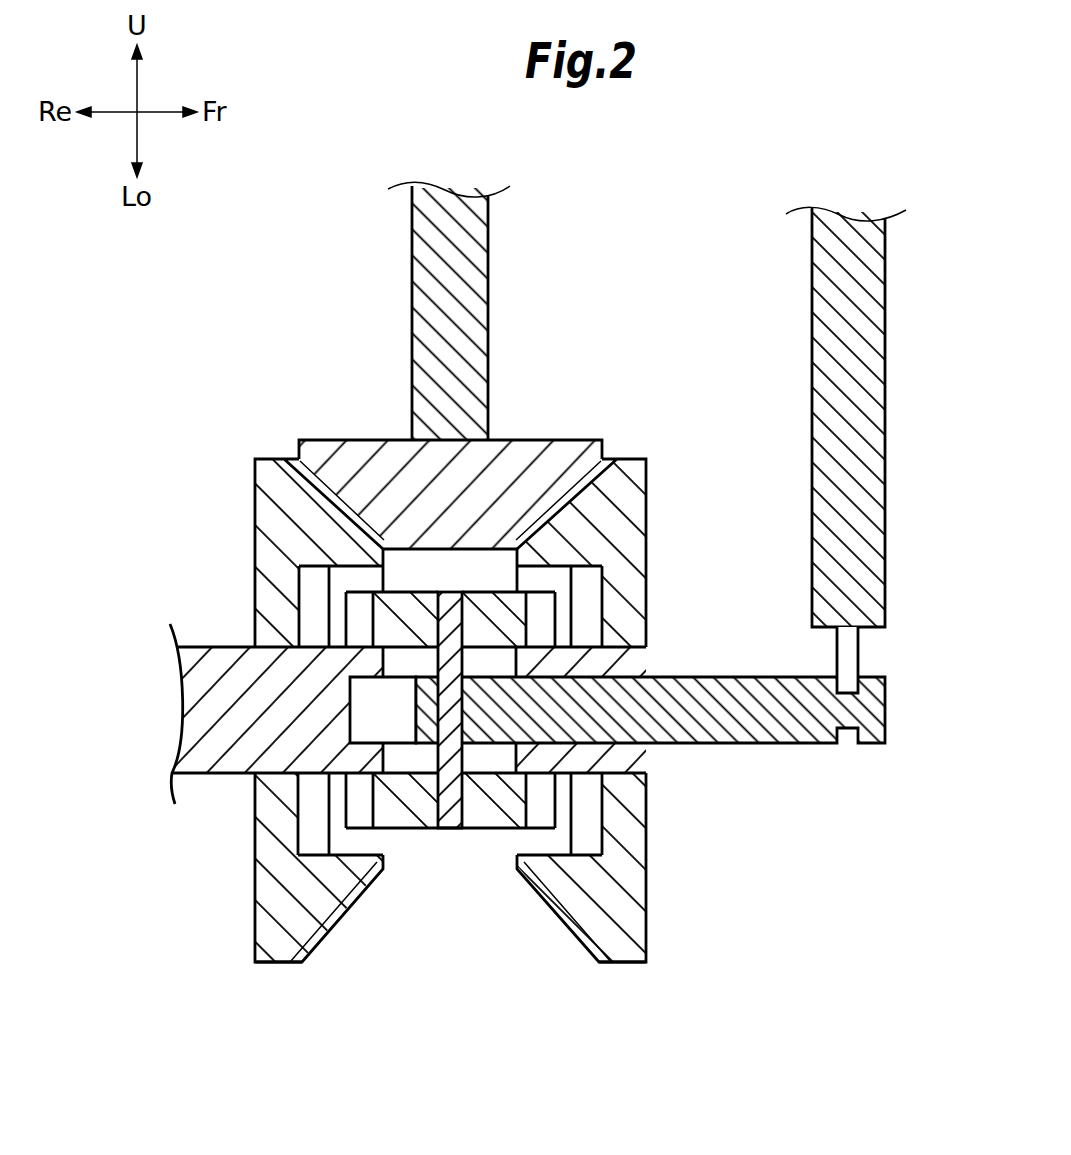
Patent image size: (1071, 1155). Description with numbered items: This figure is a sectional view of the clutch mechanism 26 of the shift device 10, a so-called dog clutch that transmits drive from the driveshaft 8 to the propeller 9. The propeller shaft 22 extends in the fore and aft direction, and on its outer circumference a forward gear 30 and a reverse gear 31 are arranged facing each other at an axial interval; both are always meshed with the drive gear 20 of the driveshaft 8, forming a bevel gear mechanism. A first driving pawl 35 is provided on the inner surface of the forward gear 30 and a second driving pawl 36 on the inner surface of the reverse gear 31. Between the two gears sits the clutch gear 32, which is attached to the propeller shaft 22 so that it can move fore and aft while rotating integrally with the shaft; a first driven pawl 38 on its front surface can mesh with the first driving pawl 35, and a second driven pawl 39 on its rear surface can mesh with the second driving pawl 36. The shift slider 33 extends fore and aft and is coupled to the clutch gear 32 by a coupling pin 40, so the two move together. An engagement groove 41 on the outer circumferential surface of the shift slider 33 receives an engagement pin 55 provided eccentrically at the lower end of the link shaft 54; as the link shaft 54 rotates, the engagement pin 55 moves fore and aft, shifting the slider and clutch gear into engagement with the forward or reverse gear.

The driveshaft 8 is at (489, 237).
The propeller 9 is at (196, 787).
The shift device 10 is at (259, 996).
The drive gear 20 is at (573, 498).
The propeller shaft 22 is at (228, 773).
The clutch mechanism 26 is at (247, 360).
The forward gear 30 is at (664, 879).
The reverse gear 31 is at (224, 916).
The clutch gear 32 is at (484, 840).
The shift slider 33 is at (802, 756).
The first driving pawl 35 is at (590, 630).
The second driving pawl 36 is at (310, 630).
The first driven pawl 38 is at (542, 603).
The second driven pawl 39 is at (358, 603).
The coupling pin 40 is at (438, 763).
The engagement groove 41 is at (852, 693).
The link shaft 54 is at (805, 282).
The engagement pin 55 is at (835, 650).